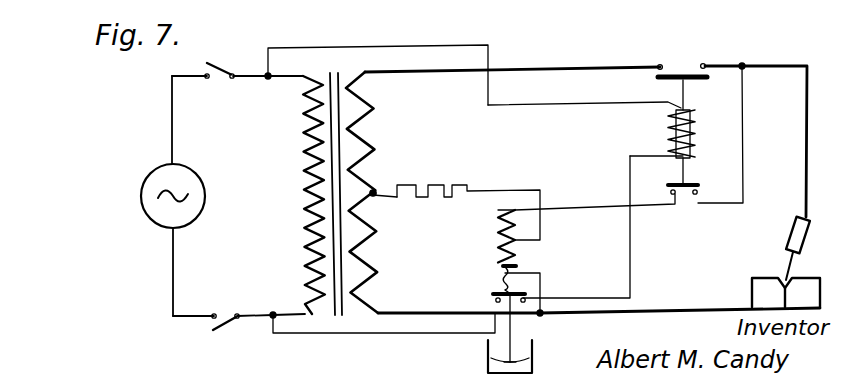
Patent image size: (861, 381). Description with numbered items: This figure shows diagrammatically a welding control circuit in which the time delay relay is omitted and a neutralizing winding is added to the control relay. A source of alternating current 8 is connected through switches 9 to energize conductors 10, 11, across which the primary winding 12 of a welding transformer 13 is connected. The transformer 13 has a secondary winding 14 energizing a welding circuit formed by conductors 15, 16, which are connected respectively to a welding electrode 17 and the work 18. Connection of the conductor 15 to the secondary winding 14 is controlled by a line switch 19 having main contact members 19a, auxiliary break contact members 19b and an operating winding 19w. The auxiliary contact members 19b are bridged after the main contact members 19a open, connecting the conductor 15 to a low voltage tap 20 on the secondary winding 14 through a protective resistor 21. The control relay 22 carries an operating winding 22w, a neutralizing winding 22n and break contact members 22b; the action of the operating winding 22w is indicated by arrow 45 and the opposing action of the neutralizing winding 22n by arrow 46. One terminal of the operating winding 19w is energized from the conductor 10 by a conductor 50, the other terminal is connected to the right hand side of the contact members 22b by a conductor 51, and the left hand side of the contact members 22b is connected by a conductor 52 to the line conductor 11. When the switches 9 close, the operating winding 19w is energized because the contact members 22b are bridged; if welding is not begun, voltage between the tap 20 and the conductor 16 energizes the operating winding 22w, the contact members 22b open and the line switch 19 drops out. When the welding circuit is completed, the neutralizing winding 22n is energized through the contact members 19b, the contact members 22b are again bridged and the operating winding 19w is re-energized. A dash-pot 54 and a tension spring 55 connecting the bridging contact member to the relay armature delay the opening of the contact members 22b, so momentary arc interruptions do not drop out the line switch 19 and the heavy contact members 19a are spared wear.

The source of alternating current 8 is at (197, 176).
The switches 9 is at (212, 82).
The conductor 10 is at (264, 77).
The conductor 11 is at (253, 313).
The primary winding 12 is at (303, 165).
The welding transformer 13 is at (336, 64).
The secondary winding 14 is at (371, 108).
The conductor 15 is at (807, 155).
The conductor 16 is at (686, 301).
The welding electrode 17 is at (790, 262).
The work 18 is at (808, 290).
The line switch 19 is at (673, 139).
The main contact members 19a is at (684, 68).
The operating winding 19w is at (692, 121).
The auxiliary break contact members 19b is at (688, 205).
The low voltage tap 20 is at (374, 191).
The protective resistor 21 is at (436, 185).
The control relay 22 is at (542, 278).
The neutralizing winding 22n is at (516, 225).
The operating winding 22w is at (516, 253).
The break contact members 22b is at (495, 303).
The arrow 45 is at (490, 258).
The arrow 46 is at (489, 222).
The conductor 50 is at (565, 103).
The conductor 51 is at (632, 252).
The conductor 52 is at (387, 334).
The dash-pot 54 is at (548, 338).
The tension spring 55 is at (543, 280).